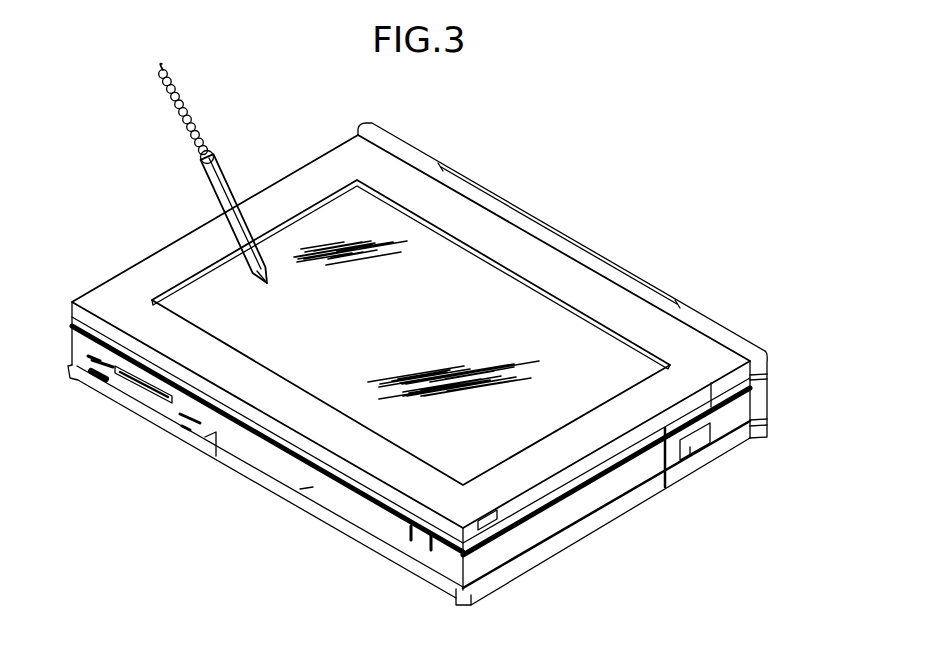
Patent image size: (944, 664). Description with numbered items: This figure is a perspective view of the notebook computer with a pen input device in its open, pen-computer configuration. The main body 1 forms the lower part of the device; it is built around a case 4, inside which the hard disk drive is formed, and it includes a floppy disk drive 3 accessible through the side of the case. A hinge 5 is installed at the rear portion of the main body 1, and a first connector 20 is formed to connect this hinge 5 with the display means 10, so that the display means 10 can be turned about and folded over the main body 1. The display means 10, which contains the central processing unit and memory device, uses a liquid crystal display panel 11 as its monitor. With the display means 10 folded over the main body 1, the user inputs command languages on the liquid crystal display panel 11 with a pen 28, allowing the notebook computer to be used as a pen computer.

The main body 1 is at (632, 528).
The floppy disk drive 3 is at (160, 388).
The case 4 is at (312, 487).
The hinge 5 is at (615, 237).
The display means 10 is at (693, 348).
The liquid crystal display panel 11 is at (342, 210).
The first connector 20 is at (513, 217).
The pen 28 is at (207, 186).